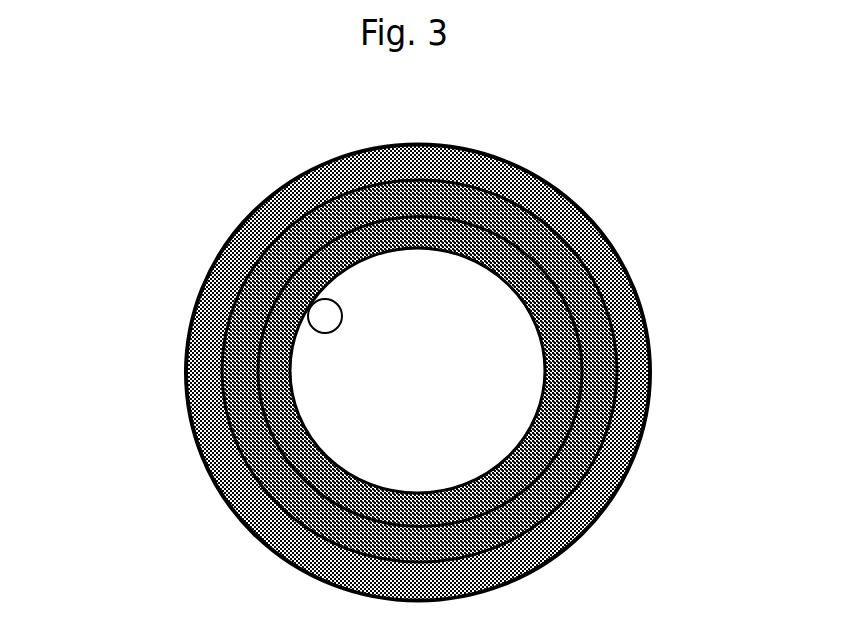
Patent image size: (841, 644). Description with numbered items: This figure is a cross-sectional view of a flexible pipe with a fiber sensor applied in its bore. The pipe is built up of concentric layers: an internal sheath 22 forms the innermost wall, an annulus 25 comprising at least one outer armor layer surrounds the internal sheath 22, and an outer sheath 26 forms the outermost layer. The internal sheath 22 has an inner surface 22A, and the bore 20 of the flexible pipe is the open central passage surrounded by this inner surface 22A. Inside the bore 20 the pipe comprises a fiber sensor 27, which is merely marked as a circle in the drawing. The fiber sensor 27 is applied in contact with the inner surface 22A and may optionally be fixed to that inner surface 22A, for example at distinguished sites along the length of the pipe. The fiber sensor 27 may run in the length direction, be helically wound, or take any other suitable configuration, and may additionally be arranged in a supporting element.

The bore 20 is at (395, 383).
The internal sheath 22 is at (562, 407).
The inner surface 22A is at (423, 498).
The annulus 25 is at (585, 315).
The outer sheath 26 is at (575, 198).
The fiber sensor 27 is at (315, 315).